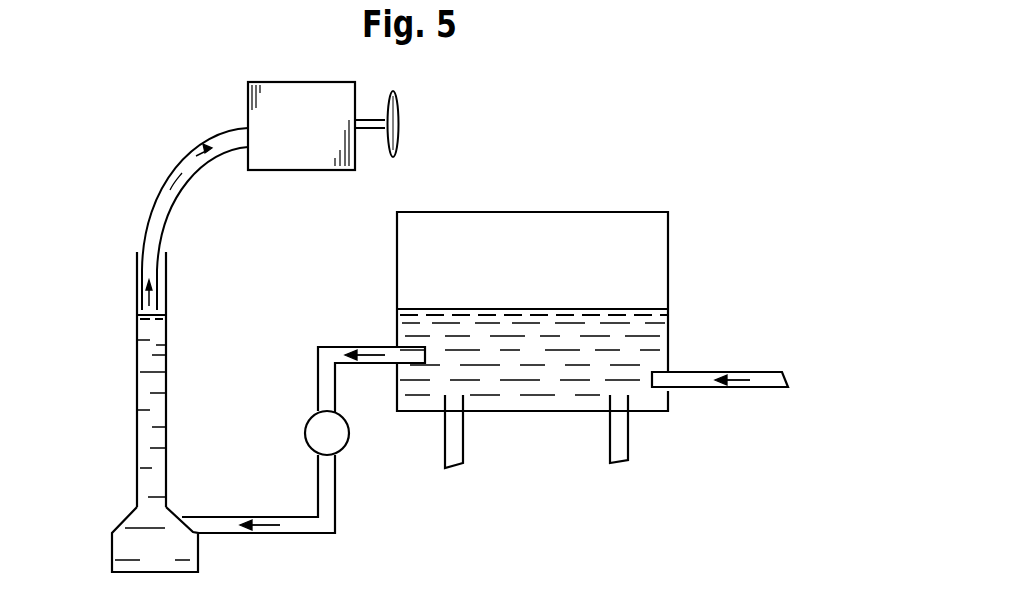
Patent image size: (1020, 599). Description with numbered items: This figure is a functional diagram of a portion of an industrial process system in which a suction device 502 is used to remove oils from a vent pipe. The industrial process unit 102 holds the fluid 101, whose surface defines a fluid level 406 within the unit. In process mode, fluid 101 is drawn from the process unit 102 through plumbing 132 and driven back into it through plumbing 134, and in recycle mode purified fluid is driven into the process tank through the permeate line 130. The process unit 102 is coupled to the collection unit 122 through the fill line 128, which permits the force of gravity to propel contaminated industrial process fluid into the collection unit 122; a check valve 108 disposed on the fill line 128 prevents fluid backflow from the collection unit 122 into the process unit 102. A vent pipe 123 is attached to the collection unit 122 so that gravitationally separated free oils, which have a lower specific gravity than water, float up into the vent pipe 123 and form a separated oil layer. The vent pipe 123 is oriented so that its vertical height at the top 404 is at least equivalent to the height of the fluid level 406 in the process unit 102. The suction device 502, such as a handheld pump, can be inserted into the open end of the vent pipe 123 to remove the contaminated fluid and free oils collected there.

The fluid 101 is at (642, 343).
The industrial process unit 102 is at (668, 229).
The check valve 108 is at (349, 436).
The collection unit 122 is at (118, 530).
The vent pipe 123 is at (137, 413).
The fill line 128 is at (285, 533).
The permeate line 130 is at (790, 372).
The plumbing 132 is at (463, 455).
The plumbing 134 is at (628, 450).
The top of vent pipe 404 is at (137, 252).
The fluid level 406 is at (668, 300).
The suction device 502 is at (247, 102).